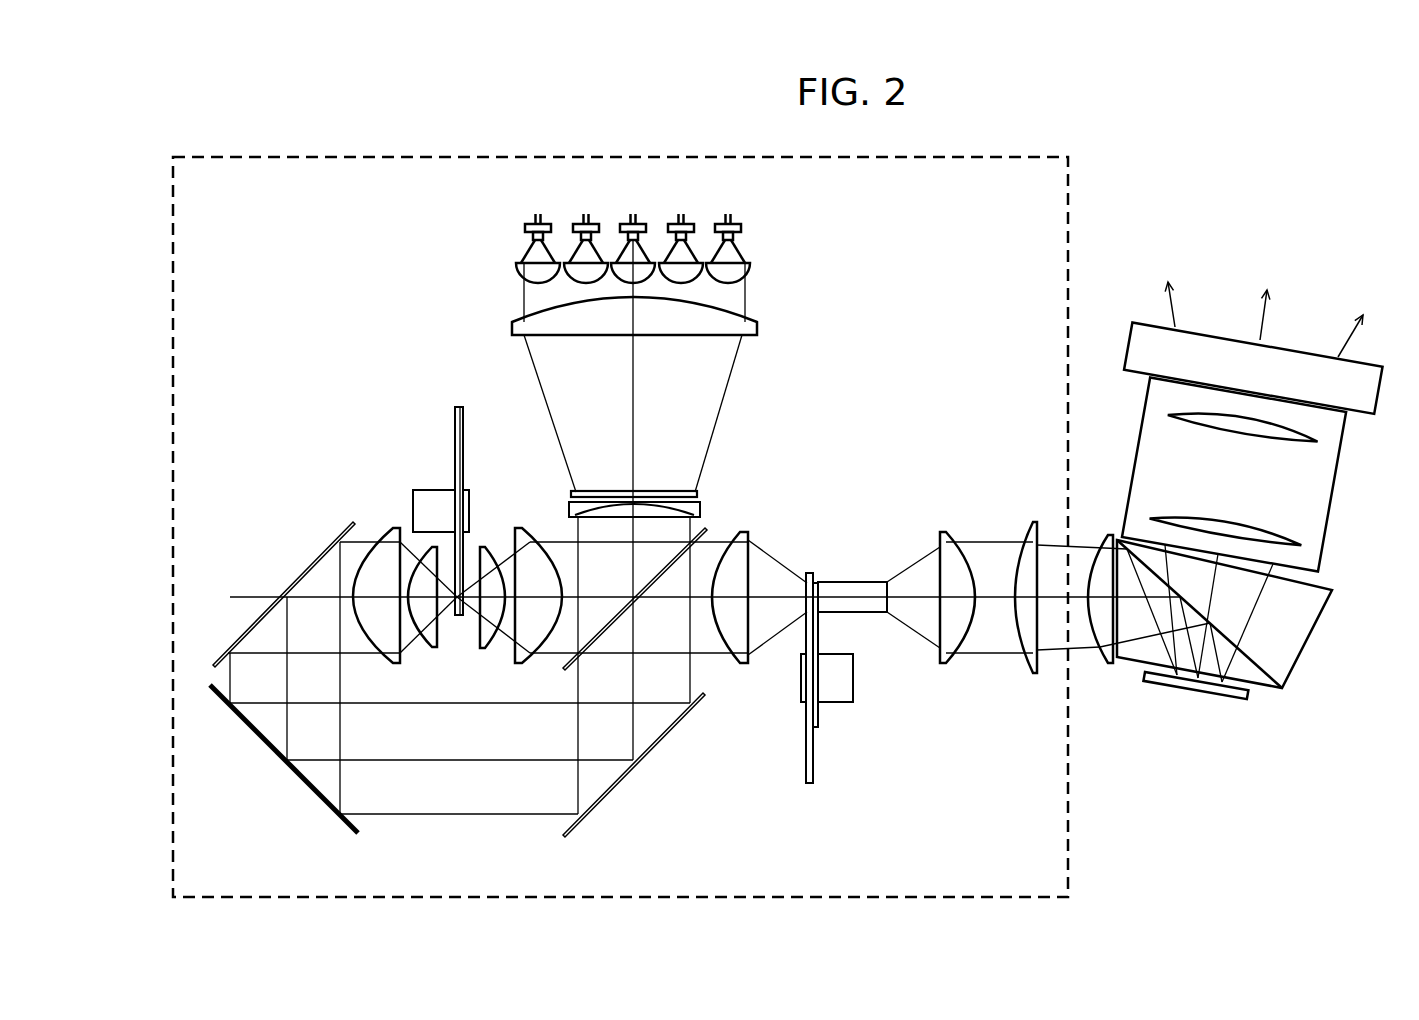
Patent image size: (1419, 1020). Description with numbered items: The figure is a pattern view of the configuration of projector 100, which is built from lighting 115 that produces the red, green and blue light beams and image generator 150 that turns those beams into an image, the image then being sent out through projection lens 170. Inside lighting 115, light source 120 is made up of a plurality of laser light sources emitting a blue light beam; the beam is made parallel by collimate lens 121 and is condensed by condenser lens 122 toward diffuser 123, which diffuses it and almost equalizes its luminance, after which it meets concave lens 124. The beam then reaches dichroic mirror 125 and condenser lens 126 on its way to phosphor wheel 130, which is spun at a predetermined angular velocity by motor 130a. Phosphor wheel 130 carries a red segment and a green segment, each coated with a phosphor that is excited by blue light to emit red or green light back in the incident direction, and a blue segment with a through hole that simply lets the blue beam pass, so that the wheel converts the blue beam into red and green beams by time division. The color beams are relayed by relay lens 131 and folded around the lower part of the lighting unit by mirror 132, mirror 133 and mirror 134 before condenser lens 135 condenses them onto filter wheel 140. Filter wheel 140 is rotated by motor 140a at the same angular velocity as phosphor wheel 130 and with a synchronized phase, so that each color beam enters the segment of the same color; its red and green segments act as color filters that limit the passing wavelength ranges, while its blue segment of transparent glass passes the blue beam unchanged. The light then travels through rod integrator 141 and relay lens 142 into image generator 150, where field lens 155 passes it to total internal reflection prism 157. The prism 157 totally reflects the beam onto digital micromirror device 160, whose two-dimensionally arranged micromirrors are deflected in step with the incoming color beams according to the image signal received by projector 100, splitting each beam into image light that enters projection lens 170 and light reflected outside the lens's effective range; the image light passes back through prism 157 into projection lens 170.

The projector 100 is at (1212, 186).
The lighting 115 is at (327, 157).
The light source 120 is at (745, 232).
The collimate lens 121 is at (752, 268).
The condenser lens 122 is at (757, 328).
The diffuser 123 is at (697, 493).
The concave lens 124 is at (700, 509).
The dichroic mirror 125 is at (563, 668).
The condenser lens 126 is at (560, 530).
The phosphor wheel 130 is at (455, 407).
The motor 130a is at (413, 490).
The relay lens 131 is at (440, 663).
The mirror 132 is at (325, 550).
The mirror 133 is at (297, 777).
The mirror 134 is at (610, 797).
The condenser lens 135 is at (745, 663).
The filter wheel 140 is at (806, 783).
The motor 140a is at (837, 702).
The rod integrator 141 is at (848, 578).
The relay lens 142 is at (930, 518).
The image generator 150 is at (1240, 672).
The field lens 155 is at (1108, 665).
The total internal reflection prism 157 is at (1318, 622).
The digital micromirror device 160 is at (1195, 716).
The projection lens 170 is at (1140, 433).